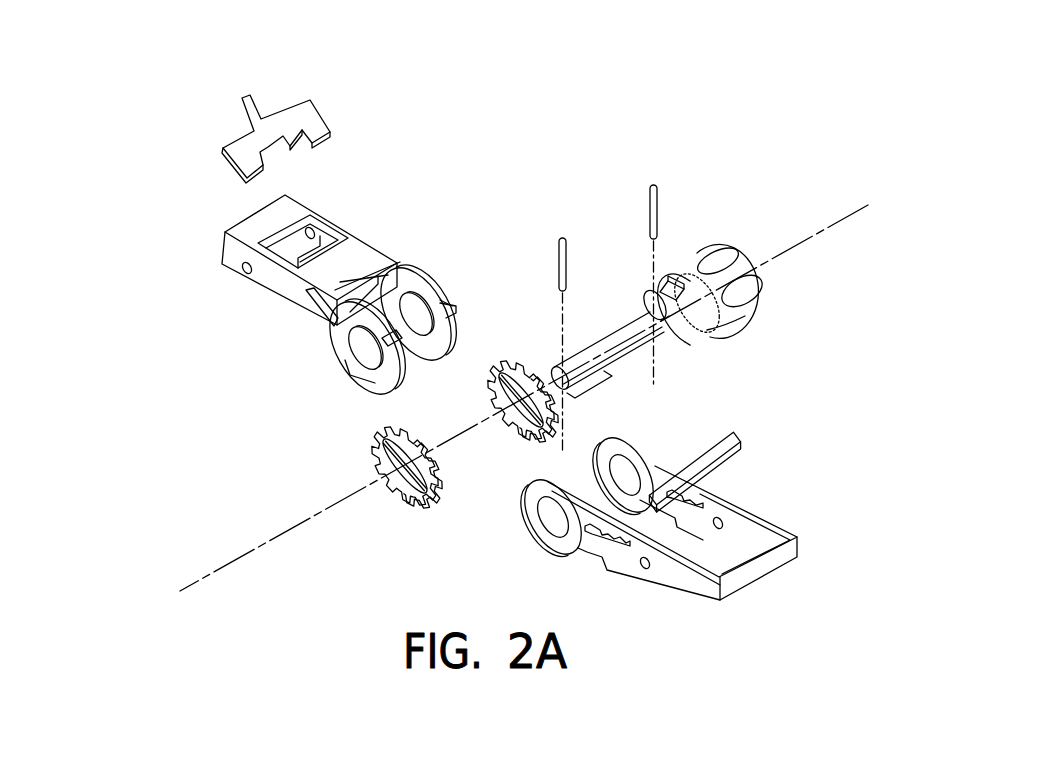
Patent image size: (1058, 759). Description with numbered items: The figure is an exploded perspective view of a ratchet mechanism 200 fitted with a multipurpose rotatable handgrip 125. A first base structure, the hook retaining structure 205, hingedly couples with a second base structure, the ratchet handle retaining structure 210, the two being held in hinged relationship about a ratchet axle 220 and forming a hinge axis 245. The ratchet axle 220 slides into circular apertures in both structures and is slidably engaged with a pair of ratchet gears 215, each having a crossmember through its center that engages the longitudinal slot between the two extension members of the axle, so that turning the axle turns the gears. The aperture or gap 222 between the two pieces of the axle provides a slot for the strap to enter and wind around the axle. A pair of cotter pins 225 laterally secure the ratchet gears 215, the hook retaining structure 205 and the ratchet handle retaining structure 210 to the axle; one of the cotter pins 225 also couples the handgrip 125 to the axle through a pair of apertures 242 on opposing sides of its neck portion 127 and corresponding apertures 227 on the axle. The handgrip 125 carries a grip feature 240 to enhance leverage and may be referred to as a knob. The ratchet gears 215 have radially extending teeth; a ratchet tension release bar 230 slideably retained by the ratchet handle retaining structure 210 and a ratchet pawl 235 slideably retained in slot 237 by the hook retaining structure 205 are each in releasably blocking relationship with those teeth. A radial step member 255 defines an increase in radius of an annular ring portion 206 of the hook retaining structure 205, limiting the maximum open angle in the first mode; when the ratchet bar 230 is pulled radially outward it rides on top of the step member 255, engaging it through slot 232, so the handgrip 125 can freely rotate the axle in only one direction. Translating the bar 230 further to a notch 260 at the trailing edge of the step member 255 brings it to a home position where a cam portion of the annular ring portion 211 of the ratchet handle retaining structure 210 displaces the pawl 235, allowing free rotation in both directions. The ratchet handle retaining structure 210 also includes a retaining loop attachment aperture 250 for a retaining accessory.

The ratchet mechanism 200 is at (148, 75).
The hook retaining structure 205 is at (218, 273).
The annular ring portion 206 is at (418, 283).
The ratchet handle retaining structure 210 is at (795, 500).
The annular ring portion 211 is at (607, 467).
The ratchet gears 215 is at (513, 435).
The ratchet axle 220 is at (584, 392).
The aperture or gap 222 is at (602, 372).
The cotter pins 225 is at (555, 250).
The apertures 227 is at (650, 306).
The ratchet tension release bar 230 is at (731, 438).
The slot 232 is at (598, 537).
The ratchet pawl 235 is at (263, 135).
The slot 237 is at (318, 303).
The grip feature 240 is at (747, 285).
The apertures 242 is at (675, 285).
The hinge axis 245 is at (228, 557).
The retaining loop attachment aperture 250 is at (315, 232).
The radial step member 255 is at (408, 371).
The notch 260 is at (458, 303).
The multipurpose rotatable handgrip 125 is at (730, 272).
The neck portion 127 is at (691, 325).